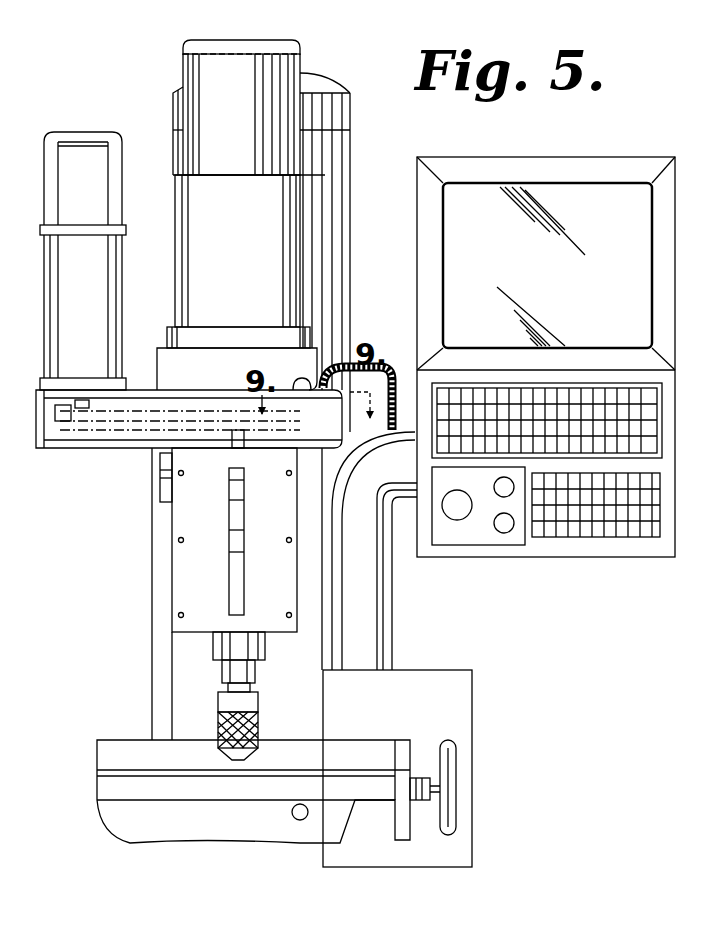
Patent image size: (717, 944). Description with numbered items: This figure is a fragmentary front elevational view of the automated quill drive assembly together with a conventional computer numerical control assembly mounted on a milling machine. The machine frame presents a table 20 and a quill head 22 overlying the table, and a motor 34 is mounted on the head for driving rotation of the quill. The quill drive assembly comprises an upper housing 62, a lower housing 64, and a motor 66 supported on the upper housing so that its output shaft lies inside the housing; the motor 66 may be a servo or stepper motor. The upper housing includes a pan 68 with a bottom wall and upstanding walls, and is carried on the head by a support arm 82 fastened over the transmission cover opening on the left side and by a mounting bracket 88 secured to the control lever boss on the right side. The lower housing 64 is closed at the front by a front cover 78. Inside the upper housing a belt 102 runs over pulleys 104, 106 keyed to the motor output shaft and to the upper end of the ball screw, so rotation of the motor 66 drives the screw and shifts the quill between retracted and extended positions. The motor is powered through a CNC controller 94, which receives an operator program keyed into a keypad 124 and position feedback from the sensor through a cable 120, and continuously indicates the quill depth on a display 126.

The table 20 is at (338, 738).
The quill head 22 is at (157, 347).
The motor 34 is at (346, 96).
The upper housing 62 is at (40, 447).
The lower housing 64 is at (168, 632).
The motor 66 is at (84, 128).
The pan 68 is at (340, 446).
The front cover 78 is at (285, 586).
The support arm 82 is at (158, 494).
The mounting bracket 88 is at (300, 376).
The CNC controller 94 is at (678, 203).
The belt 102 is at (190, 412).
The pulley 104 is at (84, 441).
The pulley 106 is at (256, 432).
The cable 120 is at (388, 362).
The keypad 124 is at (664, 415).
The display 126 is at (635, 292).